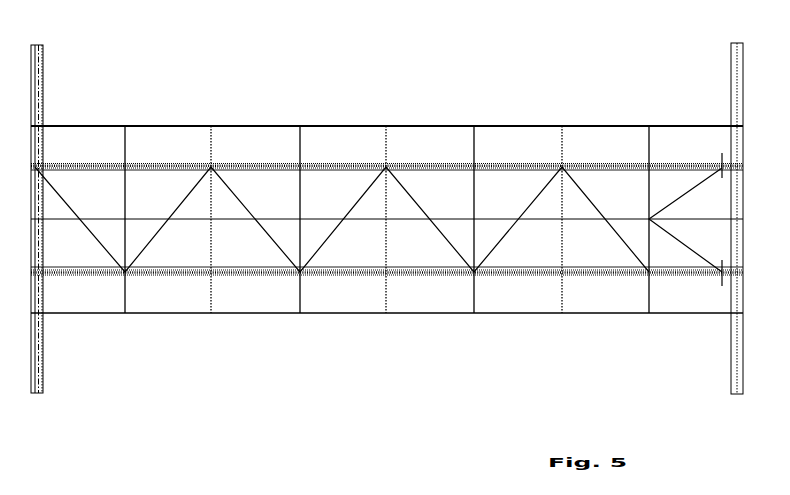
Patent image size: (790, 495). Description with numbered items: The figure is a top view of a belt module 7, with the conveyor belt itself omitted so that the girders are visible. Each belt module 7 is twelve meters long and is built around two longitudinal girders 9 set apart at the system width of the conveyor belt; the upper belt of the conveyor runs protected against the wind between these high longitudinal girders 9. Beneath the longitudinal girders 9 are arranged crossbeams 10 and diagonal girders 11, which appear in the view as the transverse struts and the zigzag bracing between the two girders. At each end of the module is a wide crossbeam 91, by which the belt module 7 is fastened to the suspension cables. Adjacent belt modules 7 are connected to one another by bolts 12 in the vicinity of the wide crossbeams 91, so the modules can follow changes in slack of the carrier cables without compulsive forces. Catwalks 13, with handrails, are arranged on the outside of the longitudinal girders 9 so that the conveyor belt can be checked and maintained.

The belt module 7 is at (239, 247).
The longitudinal girder 9 is at (337, 164).
The crossbeam 10 is at (301, 192).
The diagonal girder 11 is at (329, 238).
The bolt 12 is at (721, 157).
The catwalk 13 is at (421, 139).
The wide crossbeam 91 is at (44, 107).